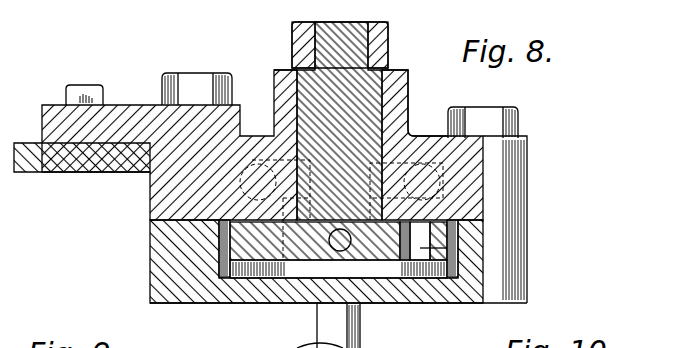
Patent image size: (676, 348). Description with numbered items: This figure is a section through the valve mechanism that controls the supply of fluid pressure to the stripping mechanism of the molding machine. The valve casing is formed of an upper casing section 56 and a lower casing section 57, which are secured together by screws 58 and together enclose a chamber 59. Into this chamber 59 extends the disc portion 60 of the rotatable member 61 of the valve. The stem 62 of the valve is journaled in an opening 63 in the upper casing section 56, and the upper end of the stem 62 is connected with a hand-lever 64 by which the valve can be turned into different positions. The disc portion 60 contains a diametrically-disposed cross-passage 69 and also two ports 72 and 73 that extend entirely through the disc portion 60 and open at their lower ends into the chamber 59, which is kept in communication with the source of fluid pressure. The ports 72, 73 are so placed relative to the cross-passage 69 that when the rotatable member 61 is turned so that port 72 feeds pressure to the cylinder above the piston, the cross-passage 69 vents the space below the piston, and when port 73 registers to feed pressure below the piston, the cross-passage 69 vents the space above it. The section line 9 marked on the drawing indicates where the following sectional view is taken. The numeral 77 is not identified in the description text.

The section line 9— 9 is at (150, 220).
The upper casing section 56 is at (150, 186).
The lower casing section 57 is at (157, 270).
The screws 58 is at (196, 72).
The chamber 59 is at (453, 270).
The disc portion 60 is at (387, 252).
The rotatable member 61 is at (367, 97).
The stem 62 is at (389, 108).
The opening 63 is at (384, 128).
The hand-lever 64 is at (388, 38).
The cross-passage 69 is at (332, 248).
The port 72 is at (229, 289).
The port 73 is at (447, 248).
The lower member 77 is at (362, 344).